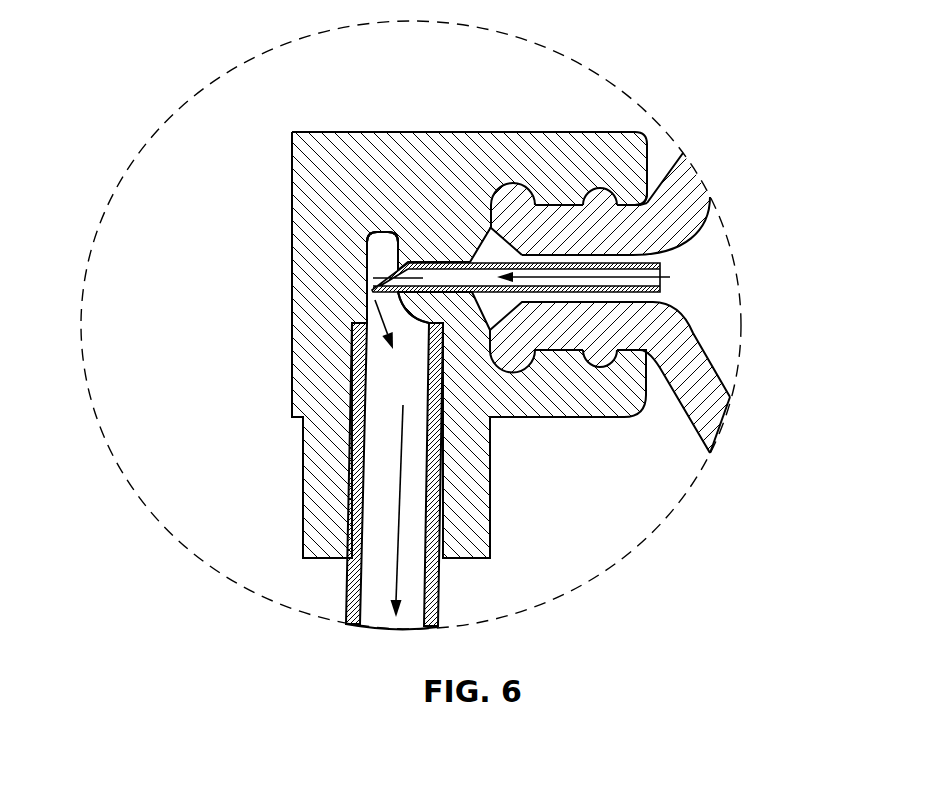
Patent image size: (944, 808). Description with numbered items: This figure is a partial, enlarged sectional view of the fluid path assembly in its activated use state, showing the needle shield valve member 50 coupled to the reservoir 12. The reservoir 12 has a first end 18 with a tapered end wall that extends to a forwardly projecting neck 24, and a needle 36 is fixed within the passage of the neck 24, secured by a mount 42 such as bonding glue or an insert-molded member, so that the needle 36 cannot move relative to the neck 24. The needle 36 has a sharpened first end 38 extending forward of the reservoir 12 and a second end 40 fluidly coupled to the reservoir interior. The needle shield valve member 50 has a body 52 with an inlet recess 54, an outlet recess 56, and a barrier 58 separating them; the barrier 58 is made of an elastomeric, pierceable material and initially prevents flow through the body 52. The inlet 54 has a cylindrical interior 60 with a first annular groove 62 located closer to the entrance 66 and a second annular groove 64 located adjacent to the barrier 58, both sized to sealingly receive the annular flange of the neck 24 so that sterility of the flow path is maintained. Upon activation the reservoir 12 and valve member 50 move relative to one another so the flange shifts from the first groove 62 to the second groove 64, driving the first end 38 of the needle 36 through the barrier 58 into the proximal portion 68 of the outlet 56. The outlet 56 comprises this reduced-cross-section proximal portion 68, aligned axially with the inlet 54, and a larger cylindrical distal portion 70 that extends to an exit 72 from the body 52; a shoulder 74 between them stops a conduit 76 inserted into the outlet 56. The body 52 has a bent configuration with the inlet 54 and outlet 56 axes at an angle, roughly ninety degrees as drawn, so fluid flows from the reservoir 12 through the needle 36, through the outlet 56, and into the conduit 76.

The needle shield valve member 50 is at (246, 73).
The body 52 is at (307, 143).
The needle 36 is at (438, 280).
The barrier 58 is at (450, 237).
The second annular groove 64 is at (513, 183).
The neck 24 is at (558, 235).
The first annular groove 62 is at (600, 190).
The entrance 66 is at (648, 197).
The first end 18 is at (678, 213).
The second end 40 is at (670, 276).
The reservoir 12 is at (690, 360).
The inlet recess 54 is at (721, 414).
The proximal portion 68 is at (382, 251).
The first end 38 is at (372, 290).
The shoulder 74 is at (410, 325).
The distal portion 70 is at (352, 465).
The exit 72 is at (352, 562).
The conduit 76 is at (360, 597).
The outlet recess 56 is at (461, 579).
The mount 42 is at (503, 303).
The cylindrical interior 60 is at (558, 350).